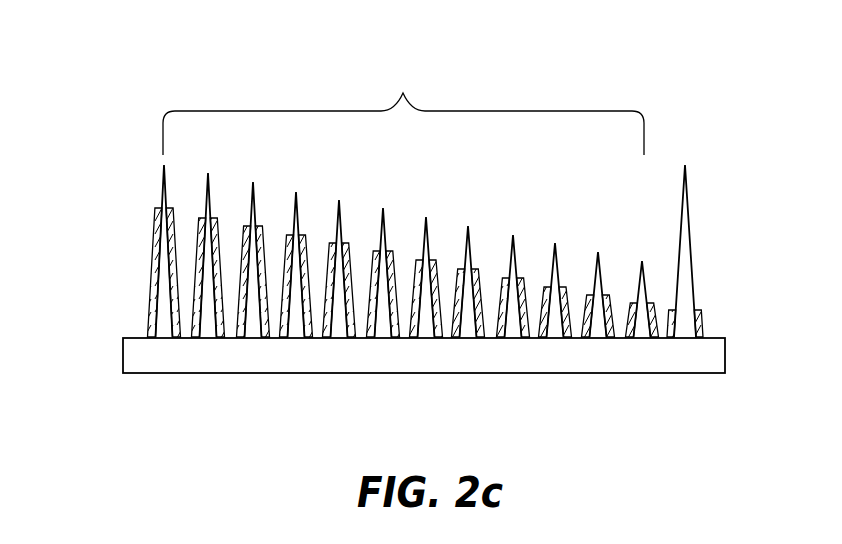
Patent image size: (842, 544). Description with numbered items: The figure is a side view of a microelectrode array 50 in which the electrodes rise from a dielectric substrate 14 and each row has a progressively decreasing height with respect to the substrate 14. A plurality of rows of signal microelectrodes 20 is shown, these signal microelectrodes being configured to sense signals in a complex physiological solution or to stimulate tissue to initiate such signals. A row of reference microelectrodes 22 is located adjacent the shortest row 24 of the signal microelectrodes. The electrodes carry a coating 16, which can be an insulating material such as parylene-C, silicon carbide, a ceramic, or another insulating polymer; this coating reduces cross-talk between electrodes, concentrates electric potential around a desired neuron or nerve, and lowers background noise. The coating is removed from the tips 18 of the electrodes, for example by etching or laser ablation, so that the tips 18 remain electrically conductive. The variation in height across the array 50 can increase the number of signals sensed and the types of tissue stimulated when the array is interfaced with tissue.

The dielectric substrate 14 is at (125, 357).
The coating 16 is at (155, 262).
The tips 18 is at (165, 188).
The rows of signal microelectrodes 20 is at (398, 78).
The row of reference microelectrodes 22 is at (688, 177).
The shortest row 24 is at (641, 255).
The microelectrode array 50 is at (112, 131).